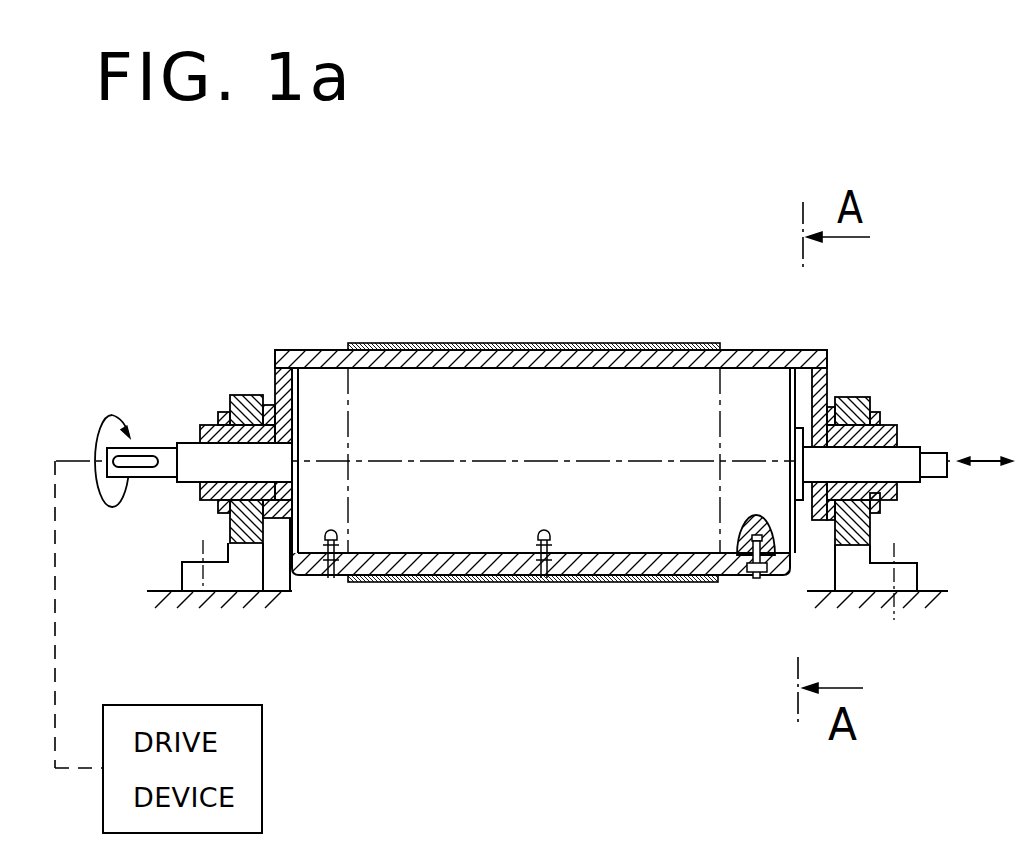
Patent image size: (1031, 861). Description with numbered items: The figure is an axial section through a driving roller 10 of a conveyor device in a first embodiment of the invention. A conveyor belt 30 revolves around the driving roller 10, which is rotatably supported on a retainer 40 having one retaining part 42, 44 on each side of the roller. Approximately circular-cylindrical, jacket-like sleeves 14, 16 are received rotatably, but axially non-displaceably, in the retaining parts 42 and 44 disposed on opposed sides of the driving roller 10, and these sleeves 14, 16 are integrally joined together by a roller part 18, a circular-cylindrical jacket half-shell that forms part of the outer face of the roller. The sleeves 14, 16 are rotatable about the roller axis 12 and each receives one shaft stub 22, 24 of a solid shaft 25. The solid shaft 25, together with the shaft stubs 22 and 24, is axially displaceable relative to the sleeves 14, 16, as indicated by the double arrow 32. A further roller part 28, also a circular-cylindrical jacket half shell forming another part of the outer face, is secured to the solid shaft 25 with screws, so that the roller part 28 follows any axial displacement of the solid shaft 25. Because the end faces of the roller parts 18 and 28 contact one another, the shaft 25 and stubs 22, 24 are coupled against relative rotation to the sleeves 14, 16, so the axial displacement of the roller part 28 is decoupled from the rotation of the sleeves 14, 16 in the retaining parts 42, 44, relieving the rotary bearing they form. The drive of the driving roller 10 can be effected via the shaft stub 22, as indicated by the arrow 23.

The driving roller 10 is at (347, 302).
The roller axis 12 is at (640, 461).
The sleeve 14 is at (203, 413).
The sleeve 16 is at (888, 423).
The roller part 18 is at (748, 351).
The shaft stub 22 is at (167, 449).
The arrow 23 is at (109, 416).
The shaft stub 24 is at (914, 448).
The solid shaft 25 is at (297, 541).
The roller part 28 is at (740, 575).
The conveyor belt 30 is at (458, 343).
The double arrow 32 is at (987, 478).
The retainer 40 is at (241, 344).
The retaining part 42 is at (237, 528).
The retaining part 44 is at (847, 545).